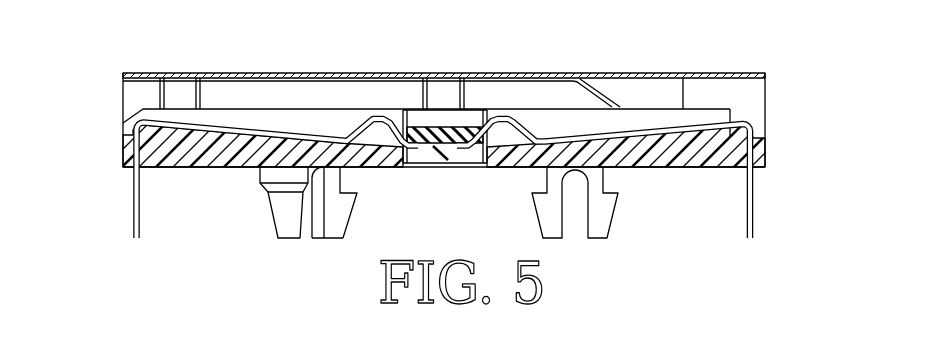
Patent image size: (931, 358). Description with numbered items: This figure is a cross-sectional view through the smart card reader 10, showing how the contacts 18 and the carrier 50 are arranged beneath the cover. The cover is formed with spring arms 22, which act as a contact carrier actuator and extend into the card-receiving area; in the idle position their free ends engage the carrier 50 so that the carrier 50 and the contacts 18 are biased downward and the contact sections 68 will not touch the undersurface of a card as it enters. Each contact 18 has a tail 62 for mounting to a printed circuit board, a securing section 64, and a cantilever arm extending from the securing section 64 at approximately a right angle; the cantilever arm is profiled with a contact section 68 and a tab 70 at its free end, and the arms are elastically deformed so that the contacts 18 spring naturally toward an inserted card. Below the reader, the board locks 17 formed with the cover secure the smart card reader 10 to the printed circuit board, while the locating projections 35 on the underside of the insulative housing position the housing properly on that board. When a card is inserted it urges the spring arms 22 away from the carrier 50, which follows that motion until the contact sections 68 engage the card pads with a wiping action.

The smart card reader 10 is at (816, 280).
The board lock 17 is at (610, 221).
The contact 18 is at (369, 136).
The spring arm 22 is at (554, 78).
The locating projection 35 is at (266, 173).
The carrier 50 is at (451, 176).
The tail 62 is at (754, 218).
The securing section 64 is at (765, 158).
The contact section 68 is at (384, 115).
The tab 70 is at (419, 147).